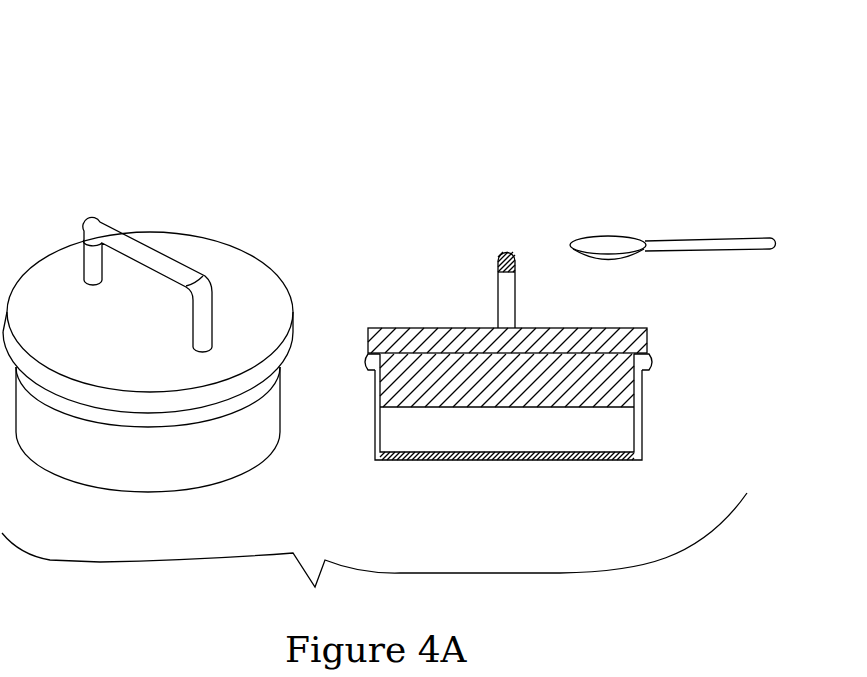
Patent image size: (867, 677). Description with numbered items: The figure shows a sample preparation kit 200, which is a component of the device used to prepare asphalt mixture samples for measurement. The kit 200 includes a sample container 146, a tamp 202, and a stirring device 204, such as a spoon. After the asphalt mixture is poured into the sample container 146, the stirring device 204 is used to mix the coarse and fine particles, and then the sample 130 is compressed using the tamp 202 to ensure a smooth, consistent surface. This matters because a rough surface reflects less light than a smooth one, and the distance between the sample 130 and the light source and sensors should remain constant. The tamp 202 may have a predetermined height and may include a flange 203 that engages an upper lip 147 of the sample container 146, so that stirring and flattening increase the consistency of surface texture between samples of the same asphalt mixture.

The sample preparation kit 200 is at (243, 132).
The tamp 202 is at (245, 297).
The sample container 146 is at (237, 430).
The upper lip 147 is at (360, 355).
The sample 130 is at (520, 433).
The flange 203 is at (592, 342).
The stirring device 204 is at (610, 243).